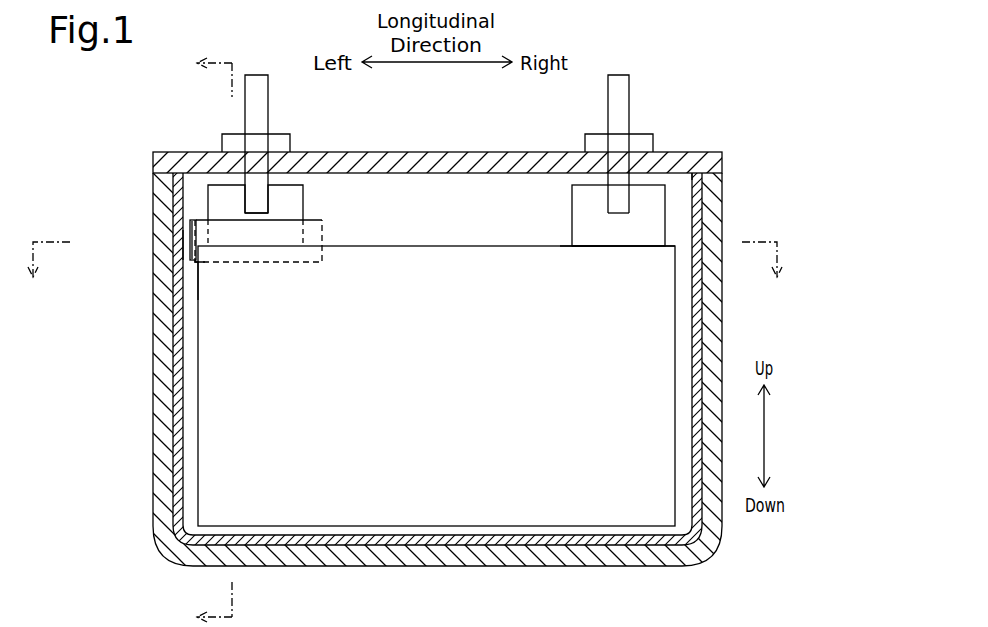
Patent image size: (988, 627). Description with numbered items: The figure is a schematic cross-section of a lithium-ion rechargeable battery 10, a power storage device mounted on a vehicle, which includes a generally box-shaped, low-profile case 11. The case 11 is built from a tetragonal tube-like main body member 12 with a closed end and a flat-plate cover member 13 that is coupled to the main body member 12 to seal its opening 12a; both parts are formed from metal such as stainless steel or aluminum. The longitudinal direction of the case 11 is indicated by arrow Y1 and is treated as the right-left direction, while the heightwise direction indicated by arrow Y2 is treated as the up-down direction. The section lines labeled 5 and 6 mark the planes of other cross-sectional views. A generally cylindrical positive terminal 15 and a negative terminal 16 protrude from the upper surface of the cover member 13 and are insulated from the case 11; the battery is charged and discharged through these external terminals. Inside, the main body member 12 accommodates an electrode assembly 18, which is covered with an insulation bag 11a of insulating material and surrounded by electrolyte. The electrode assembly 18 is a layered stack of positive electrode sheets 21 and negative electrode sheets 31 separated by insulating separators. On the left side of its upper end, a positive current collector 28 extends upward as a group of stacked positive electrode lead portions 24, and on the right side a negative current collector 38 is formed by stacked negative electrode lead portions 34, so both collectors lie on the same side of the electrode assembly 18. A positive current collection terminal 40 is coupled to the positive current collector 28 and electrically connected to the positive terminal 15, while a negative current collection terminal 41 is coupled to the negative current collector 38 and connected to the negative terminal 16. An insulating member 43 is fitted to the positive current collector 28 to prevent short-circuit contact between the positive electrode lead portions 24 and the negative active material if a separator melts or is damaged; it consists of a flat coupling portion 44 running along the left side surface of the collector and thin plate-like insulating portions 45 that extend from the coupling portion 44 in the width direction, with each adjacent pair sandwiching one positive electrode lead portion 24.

The rechargeable battery 10 is at (732, 89).
The case 11 is at (106, 153).
The insulation bag 11a is at (183, 246).
The main body member 12 is at (155, 179).
The opening 12a is at (693, 175).
The cover member 13 is at (154, 166).
The positive terminal 15 is at (254, 80).
The negative terminal 16 is at (619, 80).
The electrode assembly 18 is at (548, 540).
The positive electrode sheet 21 is at (303, 189).
The positive electrode lead portion 24 is at (292, 262).
The positive current collector 28 is at (242, 291).
The negative electrode sheet 31 is at (572, 200).
The negative electrode lead portion 34 is at (599, 248).
The negative current collector 38 is at (559, 270).
The positive current collection terminal 40 is at (253, 200).
The negative current collection terminal 41 is at (623, 198).
The insulating member 43 is at (191, 263).
The coupling portion 44 is at (190, 226).
The insulating portion 45 is at (320, 228).
The section line 5 is at (202, 341).
The section line 6 is at (405, 273).
The arrow Y1 is at (435, 63).
The arrow Y2 is at (767, 432).